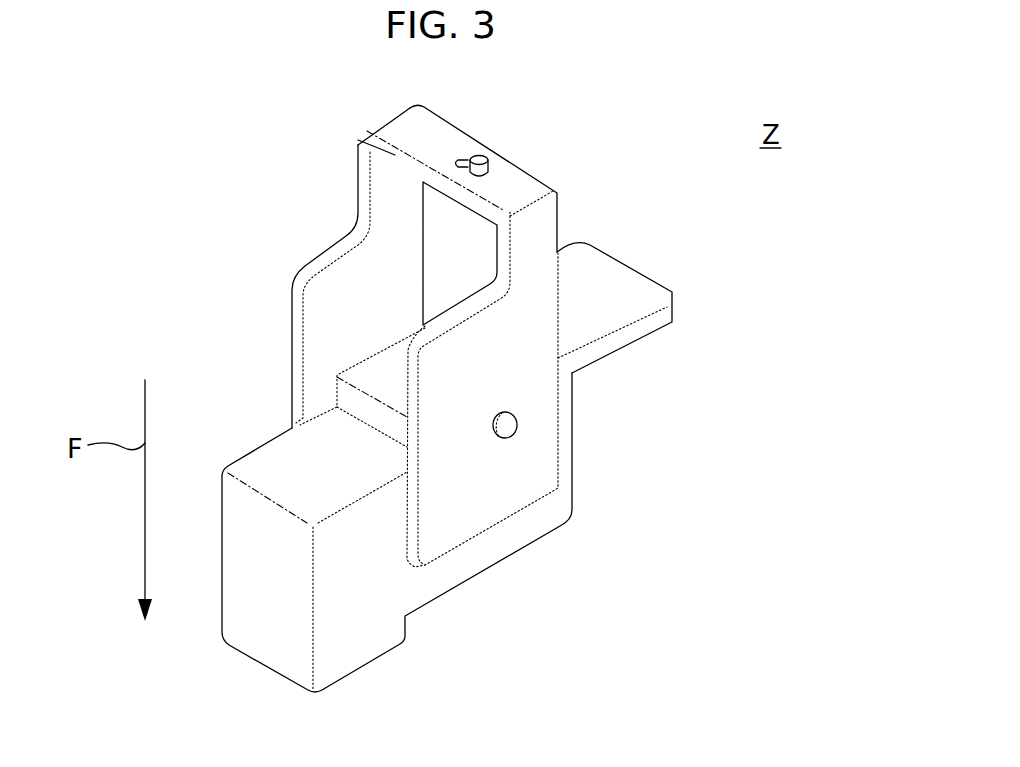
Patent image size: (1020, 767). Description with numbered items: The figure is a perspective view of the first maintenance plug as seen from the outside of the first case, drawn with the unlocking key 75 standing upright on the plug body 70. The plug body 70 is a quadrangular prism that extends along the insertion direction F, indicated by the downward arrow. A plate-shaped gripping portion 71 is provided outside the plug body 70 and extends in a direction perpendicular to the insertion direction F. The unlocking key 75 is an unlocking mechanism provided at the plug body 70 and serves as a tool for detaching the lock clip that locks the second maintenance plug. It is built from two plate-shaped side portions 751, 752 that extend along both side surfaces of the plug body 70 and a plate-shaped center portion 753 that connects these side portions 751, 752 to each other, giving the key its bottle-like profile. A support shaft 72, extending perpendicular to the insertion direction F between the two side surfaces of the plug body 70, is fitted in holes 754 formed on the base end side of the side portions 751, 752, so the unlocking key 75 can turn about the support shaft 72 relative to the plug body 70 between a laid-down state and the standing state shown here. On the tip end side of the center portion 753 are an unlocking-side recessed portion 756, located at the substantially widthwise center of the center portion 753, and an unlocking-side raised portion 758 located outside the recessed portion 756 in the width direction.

The plug body 70 is at (563, 510).
The gripping portion 71 is at (667, 308).
The support shaft 72 is at (517, 422).
The unlocking key 75 is at (264, 204).
The side portion 751 is at (510, 368).
The side portion 752 is at (292, 310).
The center portion 753 is at (392, 155).
The hole 754 is at (512, 434).
The unlocking-side recessed portion 756 is at (462, 158).
The unlocking-side raised portion 758 is at (483, 157).